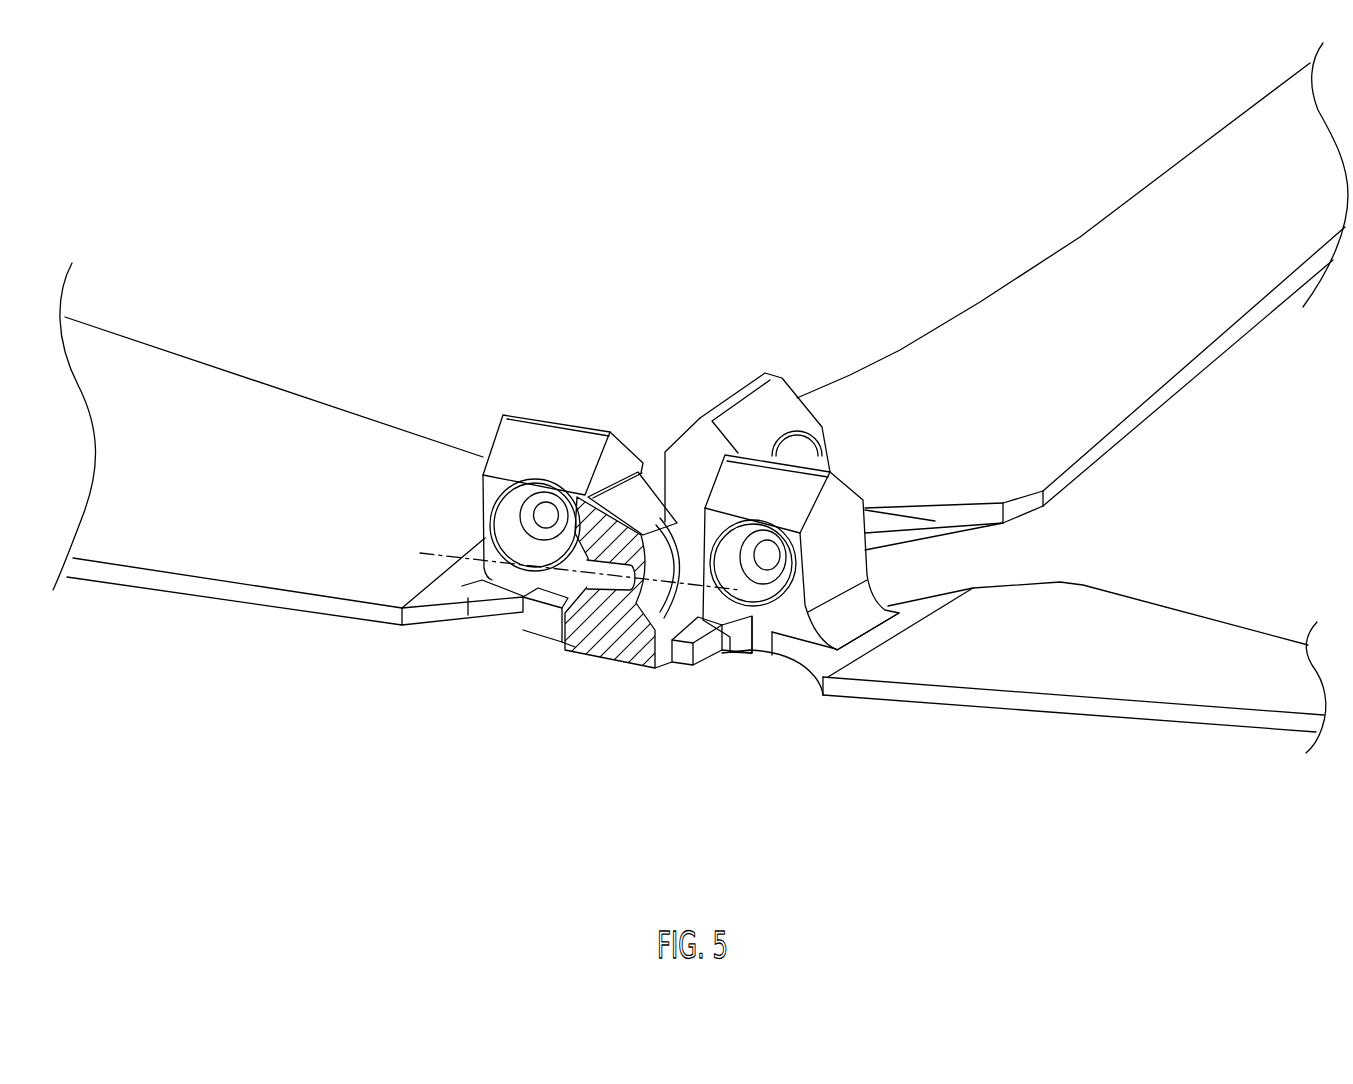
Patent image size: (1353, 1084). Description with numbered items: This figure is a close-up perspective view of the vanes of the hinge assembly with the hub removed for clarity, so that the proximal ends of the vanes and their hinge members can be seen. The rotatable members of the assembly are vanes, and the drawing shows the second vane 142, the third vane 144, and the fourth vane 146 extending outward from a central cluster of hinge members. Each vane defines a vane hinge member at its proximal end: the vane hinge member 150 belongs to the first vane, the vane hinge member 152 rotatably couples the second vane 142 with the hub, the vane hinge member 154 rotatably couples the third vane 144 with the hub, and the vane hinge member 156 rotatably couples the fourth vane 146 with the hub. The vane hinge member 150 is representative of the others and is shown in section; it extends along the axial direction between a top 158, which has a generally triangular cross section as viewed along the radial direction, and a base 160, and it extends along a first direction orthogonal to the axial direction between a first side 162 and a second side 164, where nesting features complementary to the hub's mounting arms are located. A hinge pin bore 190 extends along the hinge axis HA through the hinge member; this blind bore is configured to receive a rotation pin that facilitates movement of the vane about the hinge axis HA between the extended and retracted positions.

The second vane 142 is at (1158, 683).
The third vane 144 is at (1056, 280).
The fourth vane 146 is at (208, 378).
The vane hinge member 150 is at (634, 638).
The vane hinge member 152 is at (828, 540).
The vane hinge member 154 is at (778, 415).
The vane hinge member 156 is at (542, 458).
The top 158 is at (585, 531).
The base 160 is at (590, 645).
The first side 162 is at (533, 668).
The second side 164 is at (654, 690).
The hinge pin bore 190 is at (590, 584).
The hinge axis HA is at (560, 565).